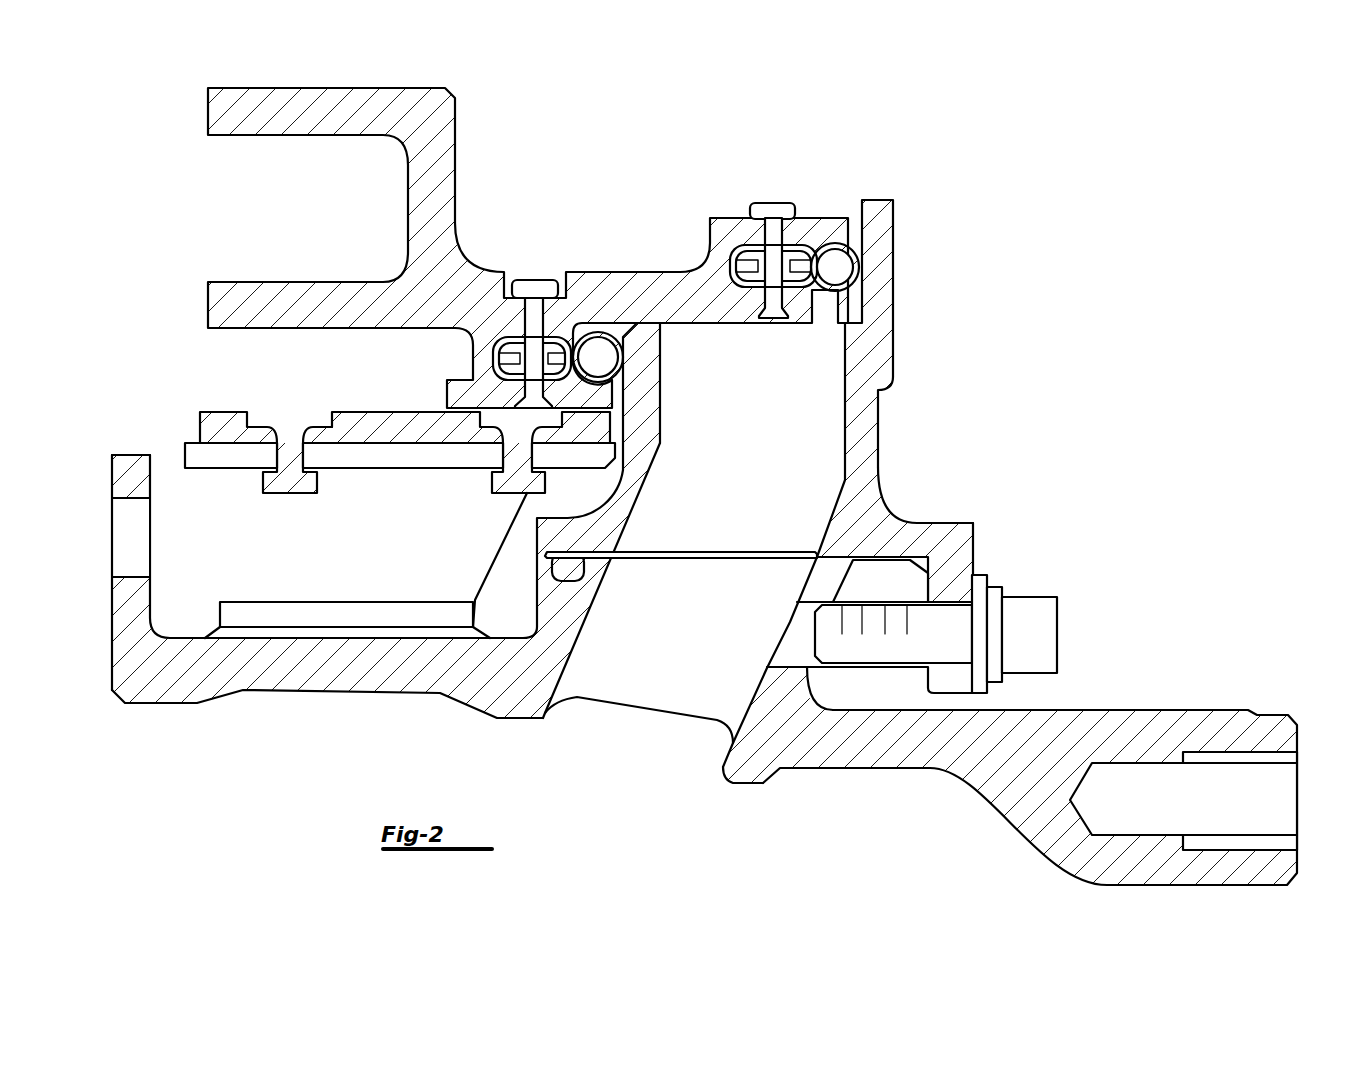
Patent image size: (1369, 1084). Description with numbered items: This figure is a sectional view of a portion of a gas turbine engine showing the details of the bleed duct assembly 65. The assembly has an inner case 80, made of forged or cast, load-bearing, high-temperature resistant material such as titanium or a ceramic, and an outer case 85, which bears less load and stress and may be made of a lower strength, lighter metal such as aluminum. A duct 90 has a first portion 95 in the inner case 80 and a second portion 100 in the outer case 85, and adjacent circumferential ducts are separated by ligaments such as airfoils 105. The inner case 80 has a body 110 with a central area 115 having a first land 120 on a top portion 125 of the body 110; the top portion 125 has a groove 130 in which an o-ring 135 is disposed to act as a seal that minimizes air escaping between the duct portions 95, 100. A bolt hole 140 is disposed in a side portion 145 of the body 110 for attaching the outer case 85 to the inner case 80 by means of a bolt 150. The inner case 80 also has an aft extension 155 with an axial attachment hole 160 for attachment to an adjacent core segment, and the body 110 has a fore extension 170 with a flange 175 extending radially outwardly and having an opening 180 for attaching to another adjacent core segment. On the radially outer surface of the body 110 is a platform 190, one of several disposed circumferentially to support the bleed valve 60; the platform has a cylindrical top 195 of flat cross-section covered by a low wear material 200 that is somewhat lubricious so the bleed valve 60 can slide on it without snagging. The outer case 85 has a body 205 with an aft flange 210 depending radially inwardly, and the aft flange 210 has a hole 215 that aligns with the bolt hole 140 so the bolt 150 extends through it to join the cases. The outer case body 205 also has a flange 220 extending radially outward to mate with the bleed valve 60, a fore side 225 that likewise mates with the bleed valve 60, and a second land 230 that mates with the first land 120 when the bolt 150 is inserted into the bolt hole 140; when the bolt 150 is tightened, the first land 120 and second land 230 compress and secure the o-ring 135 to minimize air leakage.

The bleed valve 60 is at (628, 228).
The bleed duct assembly 65 is at (1022, 278).
The inner case 80 is at (495, 693).
The outer case 85 is at (872, 390).
The duct 90 is at (804, 367).
The first portion 95 is at (664, 651).
The second portion 100 is at (730, 456).
The airfoil 105 is at (808, 419).
The body 110 is at (803, 778).
The central area 115 is at (740, 786).
The first land 120 is at (588, 569).
The top portion 125 is at (900, 553).
The groove 130 is at (582, 574).
The o-ring 135 is at (556, 577).
The bolt hole 140 is at (907, 672).
The side portion 145 is at (928, 583).
The bolt 150 is at (870, 652).
The aft extension 155 is at (1128, 838).
The axial attachment hole 160 is at (1253, 803).
The fore extension 170 is at (260, 692).
The flange 175 is at (111, 618).
The opening 180 is at (132, 498).
The platform 190 is at (346, 554).
The cylindrical top 195 is at (217, 440).
The low wear material 200 is at (382, 412).
The body 205 is at (862, 509).
The aft flange 210 is at (927, 544).
The hole 215 is at (960, 672).
The flange 220 is at (883, 223).
The fore side 225 is at (656, 347).
The second land 230 is at (582, 548).